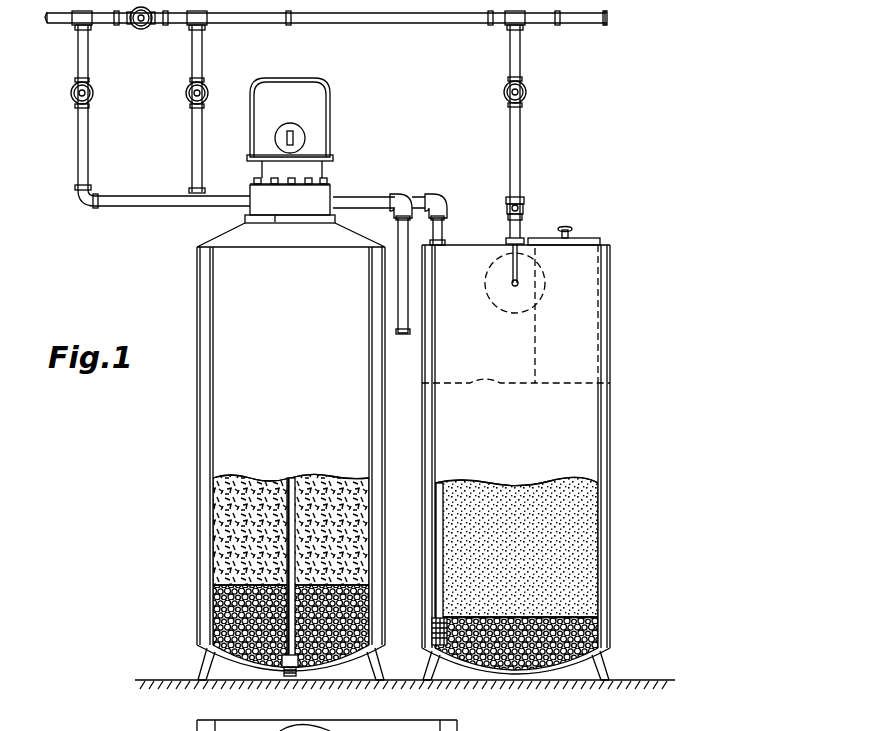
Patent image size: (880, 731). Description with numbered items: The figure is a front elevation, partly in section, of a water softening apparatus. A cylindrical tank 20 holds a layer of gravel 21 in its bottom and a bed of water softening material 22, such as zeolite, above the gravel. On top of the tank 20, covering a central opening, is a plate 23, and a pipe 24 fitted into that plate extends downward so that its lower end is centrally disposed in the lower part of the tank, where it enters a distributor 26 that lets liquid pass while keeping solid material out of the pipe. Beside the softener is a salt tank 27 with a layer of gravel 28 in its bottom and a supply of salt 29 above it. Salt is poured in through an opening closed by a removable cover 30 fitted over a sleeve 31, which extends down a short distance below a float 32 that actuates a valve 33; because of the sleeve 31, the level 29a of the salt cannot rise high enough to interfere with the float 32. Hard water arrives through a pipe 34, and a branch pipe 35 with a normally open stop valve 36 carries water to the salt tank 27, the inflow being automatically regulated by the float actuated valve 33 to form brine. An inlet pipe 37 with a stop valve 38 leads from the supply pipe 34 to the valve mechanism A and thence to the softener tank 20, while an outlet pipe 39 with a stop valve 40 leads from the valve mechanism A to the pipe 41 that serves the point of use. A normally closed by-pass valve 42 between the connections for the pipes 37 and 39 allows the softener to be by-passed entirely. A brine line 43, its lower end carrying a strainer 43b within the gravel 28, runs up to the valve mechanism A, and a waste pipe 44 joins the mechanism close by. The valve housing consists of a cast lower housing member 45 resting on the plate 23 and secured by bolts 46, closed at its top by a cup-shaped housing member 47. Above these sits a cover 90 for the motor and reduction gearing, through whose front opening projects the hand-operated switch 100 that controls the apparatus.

The cylindrical tank 20 is at (225, 413).
The layer of gravel 21 is at (212, 625).
The bed of water softening material 22 is at (215, 518).
The plate 23 is at (275, 223).
The pipe 24 is at (288, 553).
The distributor 26 is at (288, 668).
The salt tank 27 is at (595, 435).
The layer of gravel 28 is at (595, 637).
The supply of salt 29 is at (595, 538).
The level of the salt 29a is at (457, 383).
The removable cover 30 is at (578, 240).
The sleeve 31 is at (590, 320).
The float 32 is at (505, 298).
The valve 33 is at (524, 207).
The pipe 34 is at (565, 23).
The branch pipe 35 is at (516, 132).
The stop valve 36 is at (525, 92).
The inlet pipe 37 is at (195, 62).
The stop valve 38 is at (187, 95).
The pipe 39 is at (82, 142).
The stop valve 40 is at (74, 97).
The pipe 41 is at (53, 21).
The by-pass valve 42 is at (139, 30).
The brine line 43 is at (437, 208).
The strainer 43b is at (437, 632).
The waste pipe 44 is at (368, 205).
The lower housing member 45 is at (258, 208).
The bolts 46 is at (323, 178).
The cup-shaped housing member 47 is at (262, 170).
The cover 90 is at (318, 110).
The hand-operated switch 100 is at (282, 127).
The valve mechanism A is at (318, 200).